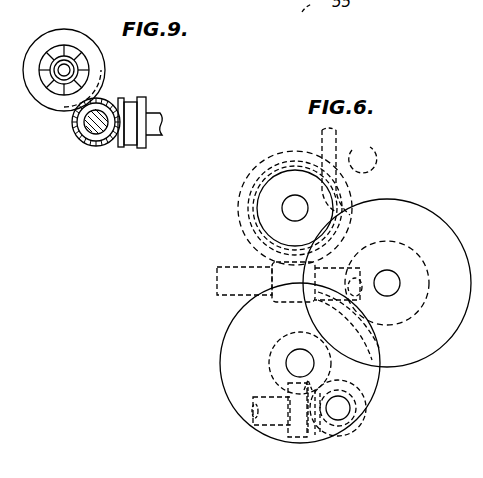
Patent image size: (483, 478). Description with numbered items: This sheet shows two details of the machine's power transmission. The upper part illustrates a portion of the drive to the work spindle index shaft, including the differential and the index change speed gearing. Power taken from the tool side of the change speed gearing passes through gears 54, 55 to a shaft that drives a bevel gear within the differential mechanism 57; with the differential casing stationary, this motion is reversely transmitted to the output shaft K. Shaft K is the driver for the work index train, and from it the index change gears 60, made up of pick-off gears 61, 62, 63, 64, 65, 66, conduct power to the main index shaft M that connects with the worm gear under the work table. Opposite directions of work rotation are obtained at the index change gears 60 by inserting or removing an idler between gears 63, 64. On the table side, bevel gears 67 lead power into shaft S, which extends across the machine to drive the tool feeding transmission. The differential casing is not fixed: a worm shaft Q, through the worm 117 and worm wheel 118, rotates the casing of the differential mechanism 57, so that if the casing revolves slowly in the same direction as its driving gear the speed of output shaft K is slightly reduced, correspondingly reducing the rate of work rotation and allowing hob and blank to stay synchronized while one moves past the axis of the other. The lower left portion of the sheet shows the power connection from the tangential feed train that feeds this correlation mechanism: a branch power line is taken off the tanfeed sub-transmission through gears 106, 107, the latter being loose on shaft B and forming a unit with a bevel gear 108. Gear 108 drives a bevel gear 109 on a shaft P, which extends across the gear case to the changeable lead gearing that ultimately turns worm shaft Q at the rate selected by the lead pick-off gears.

In FIG. 9, the gear 106 is at (56, 106).
In FIG. 9, the gear 107 is at (82, 139).
In FIG. 9, the bevel gear 108 is at (114, 104).
In FIG. 9, the bevel gear 109 is at (119, 138).
In FIG. 9, the shaft B is at (73, 126).
In FIG. 9, the shaft P is at (158, 112).
In FIG. 6, the gear 54 is at (334, 143).
In FIG. 6, the gear 55 is at (305, 162).
In FIG. 6, the differential mechanism 57 is at (273, 160).
In FIG. 6, the pick-off gear 61 is at (257, 208).
In FIG. 6, the output shaft K is at (295, 208).
In FIG. 6, the worm wheel 118 is at (260, 254).
In FIG. 6, the worm 117 is at (274, 278).
In FIG. 6, the worm shaft Q is at (216, 279).
In FIG. 6, the pick-off gear 62 is at (387, 283).
In FIG. 6, the pick-off gear 63 is at (430, 294).
In FIG. 6, the pick-off gear 64 is at (382, 343).
In FIG. 6, the index change gears 60 is at (450, 389).
In FIG. 6, the pick-off gear 65 is at (285, 346).
In FIG. 6, the shaft S is at (258, 398).
In FIG. 6, the bevel gears 67 is at (318, 440).
In FIG. 6, the pick-off gear 66 is at (372, 419).
In FIG. 6, the main index shaft M is at (360, 402).